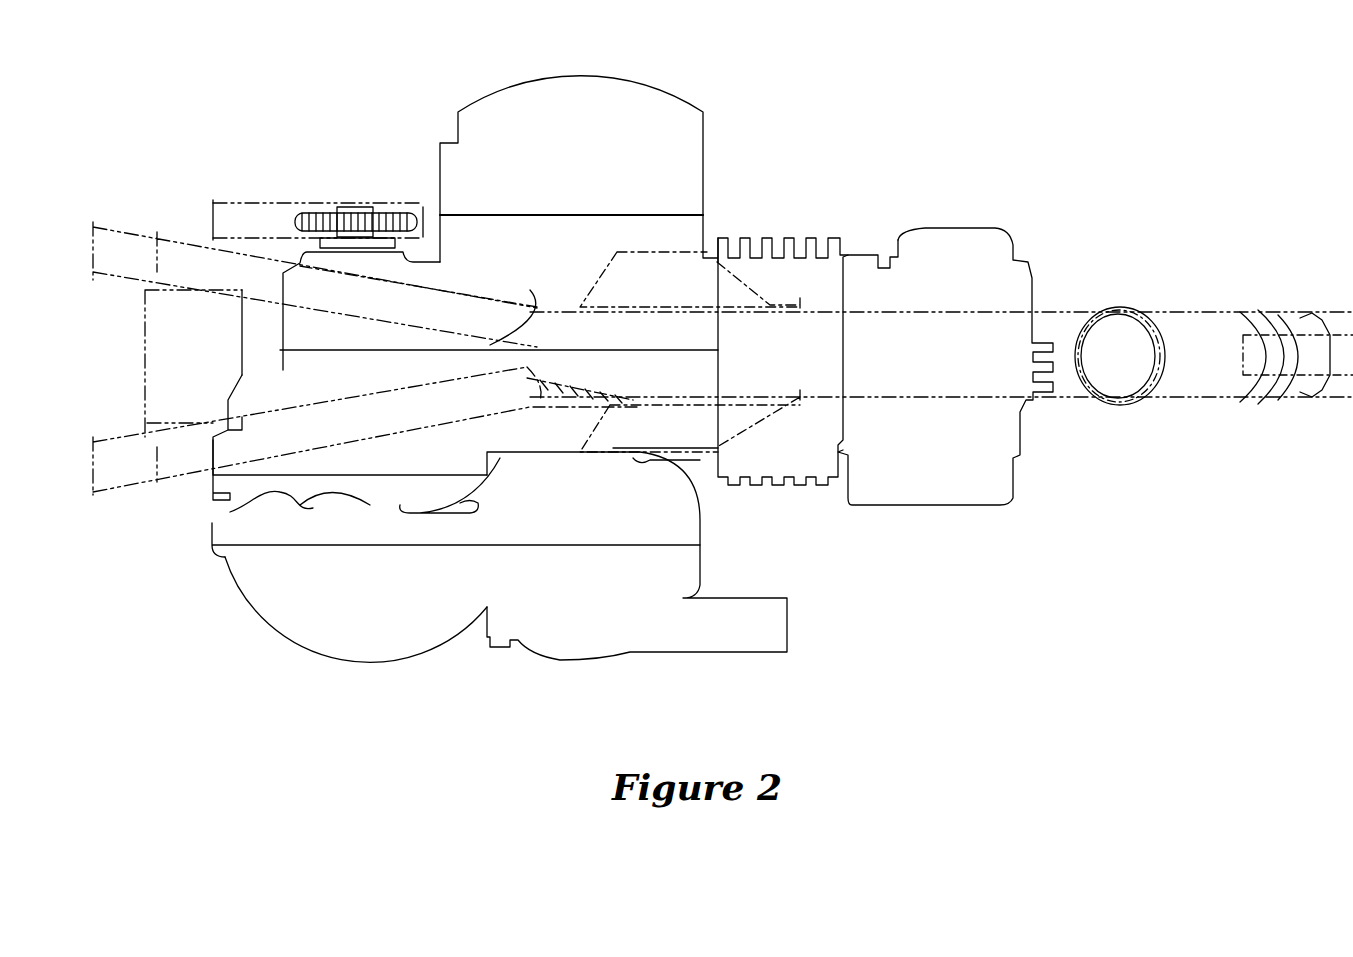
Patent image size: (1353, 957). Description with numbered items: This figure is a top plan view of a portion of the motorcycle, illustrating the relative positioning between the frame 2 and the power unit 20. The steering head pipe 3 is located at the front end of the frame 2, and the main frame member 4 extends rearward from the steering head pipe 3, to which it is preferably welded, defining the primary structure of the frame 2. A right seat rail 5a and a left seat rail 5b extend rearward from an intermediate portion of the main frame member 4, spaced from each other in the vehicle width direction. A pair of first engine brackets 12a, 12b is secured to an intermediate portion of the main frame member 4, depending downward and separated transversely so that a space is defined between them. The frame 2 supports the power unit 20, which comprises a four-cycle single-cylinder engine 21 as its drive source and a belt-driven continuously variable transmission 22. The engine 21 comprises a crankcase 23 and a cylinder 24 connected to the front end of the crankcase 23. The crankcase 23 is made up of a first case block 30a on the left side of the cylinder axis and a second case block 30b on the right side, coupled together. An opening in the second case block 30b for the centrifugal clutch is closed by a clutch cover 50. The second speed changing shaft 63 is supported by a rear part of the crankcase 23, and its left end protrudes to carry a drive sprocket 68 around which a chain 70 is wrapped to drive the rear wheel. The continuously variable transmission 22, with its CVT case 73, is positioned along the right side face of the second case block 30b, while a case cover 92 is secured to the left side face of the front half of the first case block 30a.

The frame 2 is at (1078, 312).
The steering head pipe 3 is at (1211, 388).
The main frame member 4 is at (935, 383).
The right seat rail 5a is at (455, 305).
The left seat rail 5b is at (383, 430).
The first engine bracket 12a is at (655, 258).
The first engine bracket 12b is at (618, 455).
The power unit 20 is at (848, 176).
The engine 21 is at (784, 490).
The continuously variable transmission 22 is at (252, 625).
The crankcase 23 is at (577, 240).
The cylinder 24 is at (778, 272).
The first case block 30a is at (300, 330).
The second case block 30b is at (300, 375).
The clutch cover 50 is at (250, 500).
The second speed changing shaft 63 is at (355, 205).
The drive sprocket 68 is at (317, 222).
The chain 70 is at (232, 212).
The CVT case 73 is at (453, 600).
The case cover 92 is at (530, 120).